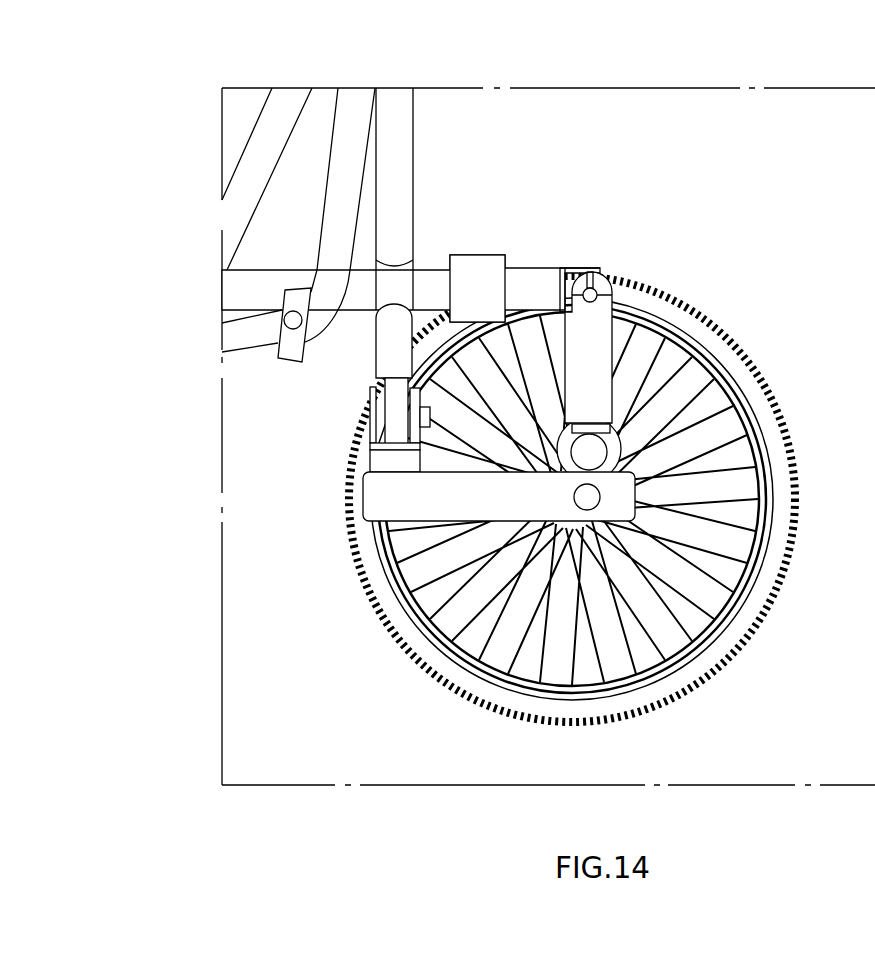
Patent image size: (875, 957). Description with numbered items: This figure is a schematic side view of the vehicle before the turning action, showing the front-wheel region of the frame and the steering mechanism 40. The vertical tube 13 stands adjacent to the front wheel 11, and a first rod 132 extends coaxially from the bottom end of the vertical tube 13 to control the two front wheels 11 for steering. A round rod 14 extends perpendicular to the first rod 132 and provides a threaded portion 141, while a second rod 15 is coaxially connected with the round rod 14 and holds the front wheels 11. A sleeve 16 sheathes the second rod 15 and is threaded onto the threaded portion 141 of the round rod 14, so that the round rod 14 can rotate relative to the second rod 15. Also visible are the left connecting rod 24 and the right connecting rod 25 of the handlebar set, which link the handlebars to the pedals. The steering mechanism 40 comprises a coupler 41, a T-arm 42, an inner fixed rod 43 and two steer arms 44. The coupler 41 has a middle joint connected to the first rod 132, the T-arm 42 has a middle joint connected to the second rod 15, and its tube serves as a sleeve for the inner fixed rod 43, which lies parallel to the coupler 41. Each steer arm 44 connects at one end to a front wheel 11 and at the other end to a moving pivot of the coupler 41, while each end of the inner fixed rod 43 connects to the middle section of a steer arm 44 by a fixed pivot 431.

The front wheel 11 is at (713, 345).
The vertical tube 13 is at (408, 175).
The round rod 14 is at (430, 270).
The threaded portion 141 is at (460, 247).
The second rod 15 is at (527, 268).
The sleeve 16 is at (487, 260).
The left connecting rod 24 is at (233, 223).
The right connecting rod 25 is at (327, 190).
The steering mechanism 40 is at (622, 255).
The coupler 41 is at (390, 450).
The T-arm 42 is at (602, 340).
The inner fixed rod 43 is at (597, 455).
The fixed pivot 431 is at (617, 430).
The steer arm 44 is at (398, 503).
The first rod 132 is at (388, 360).